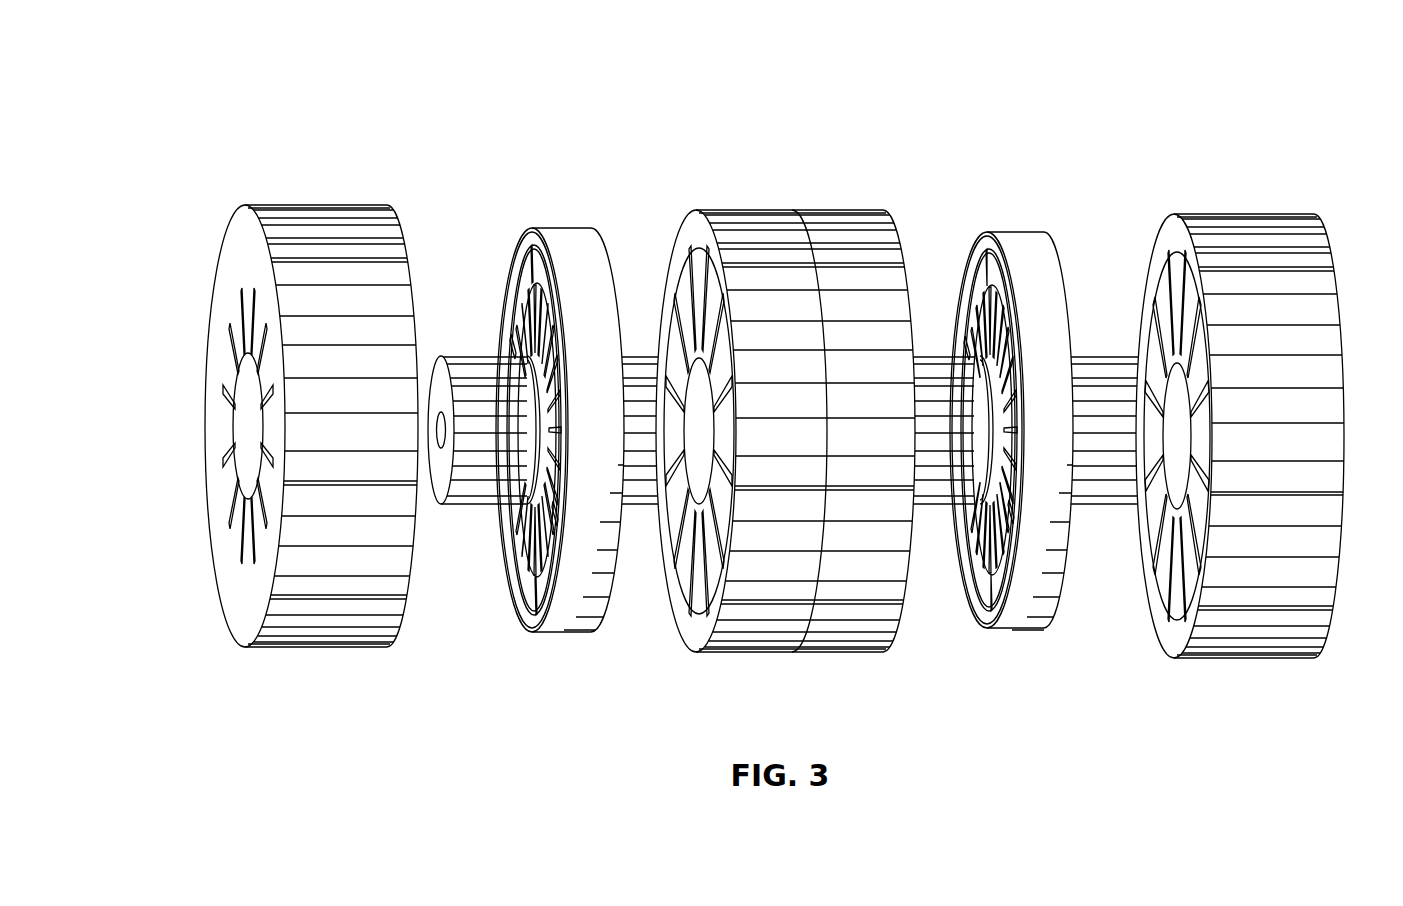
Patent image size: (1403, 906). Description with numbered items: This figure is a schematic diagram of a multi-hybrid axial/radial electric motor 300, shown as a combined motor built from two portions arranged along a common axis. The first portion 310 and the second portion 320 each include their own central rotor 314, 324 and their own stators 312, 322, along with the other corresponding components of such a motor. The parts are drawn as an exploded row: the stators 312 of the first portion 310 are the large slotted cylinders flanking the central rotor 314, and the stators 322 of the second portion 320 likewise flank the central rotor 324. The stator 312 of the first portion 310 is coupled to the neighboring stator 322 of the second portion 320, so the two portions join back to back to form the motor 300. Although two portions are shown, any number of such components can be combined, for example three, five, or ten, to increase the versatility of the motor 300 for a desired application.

The multi-hybrid axial/radial electric motor 300 is at (749, 380).
The first portion 310 is at (516, 408).
The second portion 320 is at (1063, 405).
The stator 312 is at (237, 673).
The central rotor 314 is at (403, 678).
The stator 322 is at (900, 676).
The central rotor 324 is at (1137, 680).